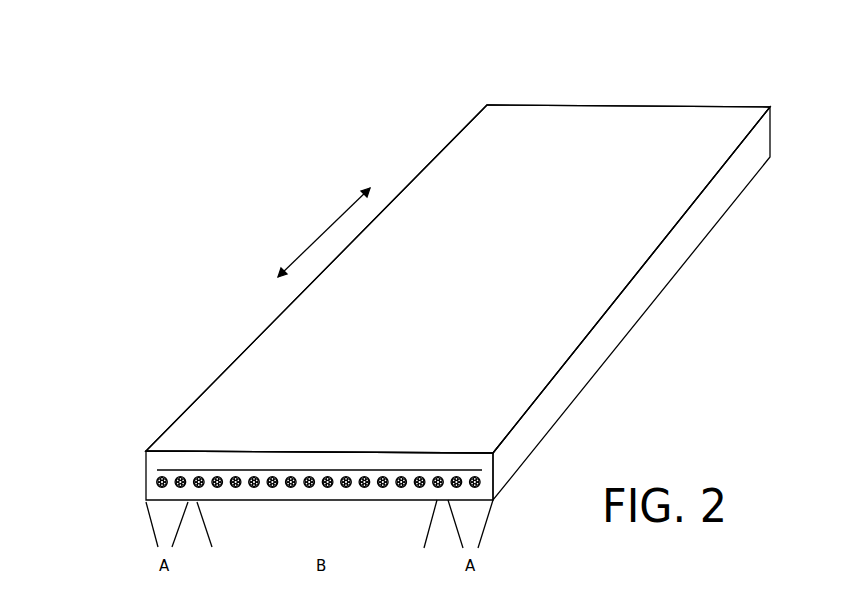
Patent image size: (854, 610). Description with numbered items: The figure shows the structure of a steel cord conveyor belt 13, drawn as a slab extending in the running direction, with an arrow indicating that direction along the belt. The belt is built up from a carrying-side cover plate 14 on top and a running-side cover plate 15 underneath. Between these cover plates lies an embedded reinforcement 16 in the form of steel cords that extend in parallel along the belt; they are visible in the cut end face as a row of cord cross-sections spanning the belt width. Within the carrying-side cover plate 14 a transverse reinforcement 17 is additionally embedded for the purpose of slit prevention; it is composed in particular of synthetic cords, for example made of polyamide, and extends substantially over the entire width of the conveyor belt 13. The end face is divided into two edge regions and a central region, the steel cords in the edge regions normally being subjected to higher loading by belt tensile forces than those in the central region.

The conveyor belt 13 is at (251, 211).
The carrying-side cover plate 14 is at (693, 132).
The running-side cover plate 15 is at (645, 307).
The embedded reinforcement 16 is at (157, 478).
The transverse reinforcement 17 is at (177, 468).